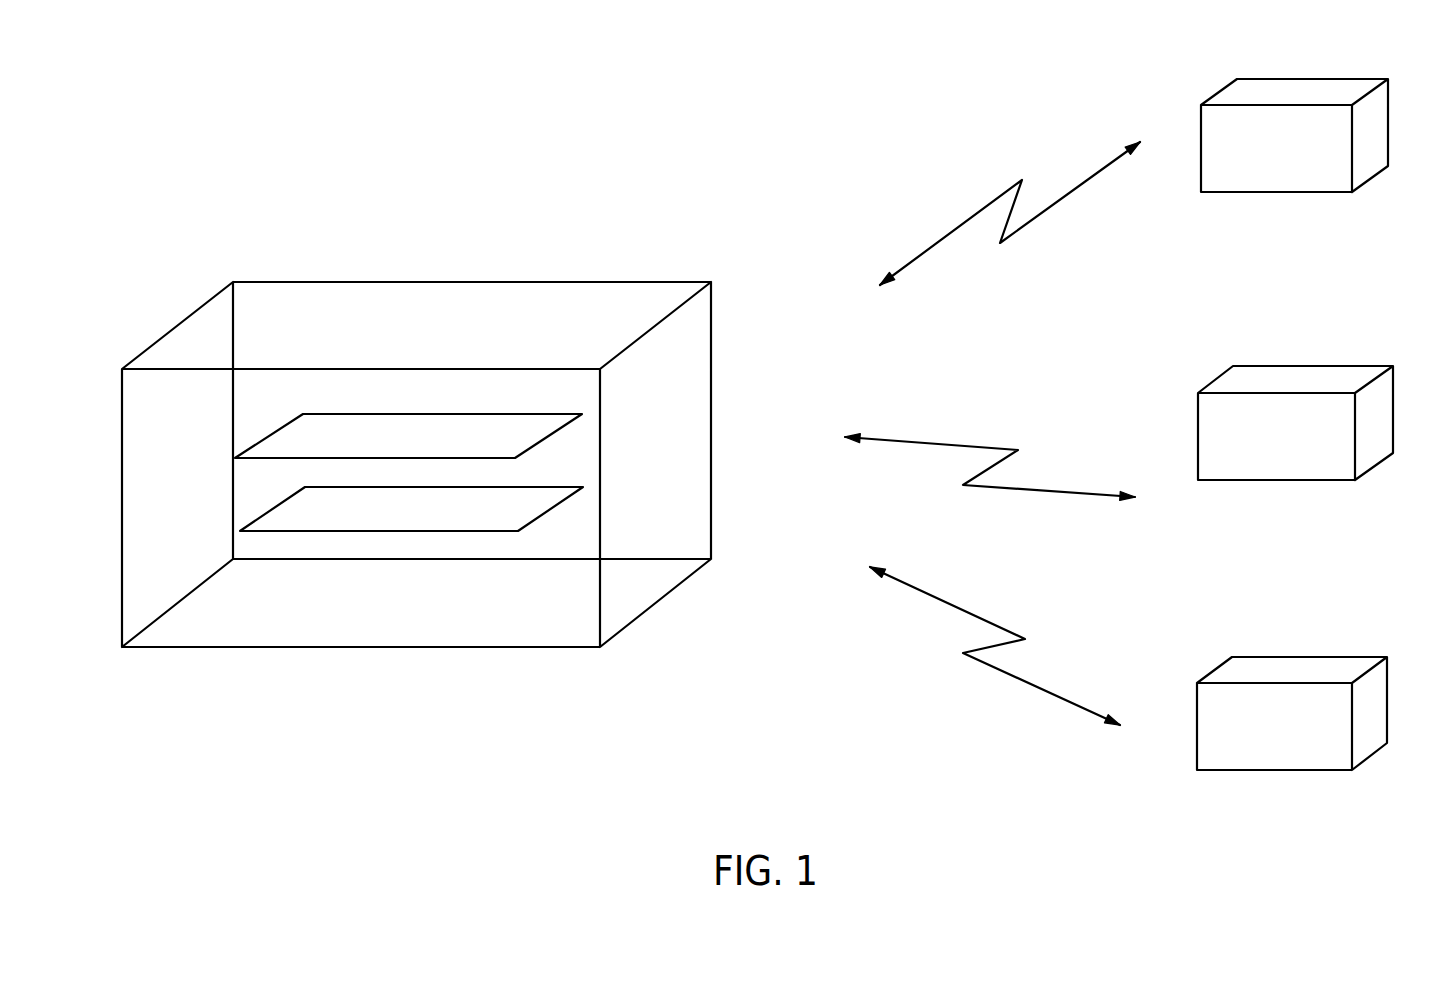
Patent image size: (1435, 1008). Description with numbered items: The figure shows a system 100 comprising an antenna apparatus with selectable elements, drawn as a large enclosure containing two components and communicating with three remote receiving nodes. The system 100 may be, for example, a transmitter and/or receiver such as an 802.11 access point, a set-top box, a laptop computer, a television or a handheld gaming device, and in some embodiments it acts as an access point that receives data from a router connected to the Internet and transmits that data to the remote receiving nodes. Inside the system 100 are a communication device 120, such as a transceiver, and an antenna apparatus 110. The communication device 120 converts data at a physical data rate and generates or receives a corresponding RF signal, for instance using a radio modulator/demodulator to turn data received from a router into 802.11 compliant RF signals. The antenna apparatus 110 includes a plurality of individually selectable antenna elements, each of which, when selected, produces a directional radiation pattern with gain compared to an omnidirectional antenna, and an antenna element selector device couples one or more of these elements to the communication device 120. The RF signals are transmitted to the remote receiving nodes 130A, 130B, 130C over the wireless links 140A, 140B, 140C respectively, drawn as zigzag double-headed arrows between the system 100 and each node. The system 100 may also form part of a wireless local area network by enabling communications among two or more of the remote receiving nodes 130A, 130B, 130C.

The system 100 is at (211, 297).
The antenna apparatus 110 is at (540, 443).
The communication device 120 is at (543, 510).
The remote receiving node 130A is at (1340, 76).
The remote receiving node 130B is at (1343, 362).
The remote receiving node 130C is at (1338, 653).
The wireless link 140A is at (986, 207).
The wireless link 140B is at (982, 447).
The wireless link 140C is at (982, 660).